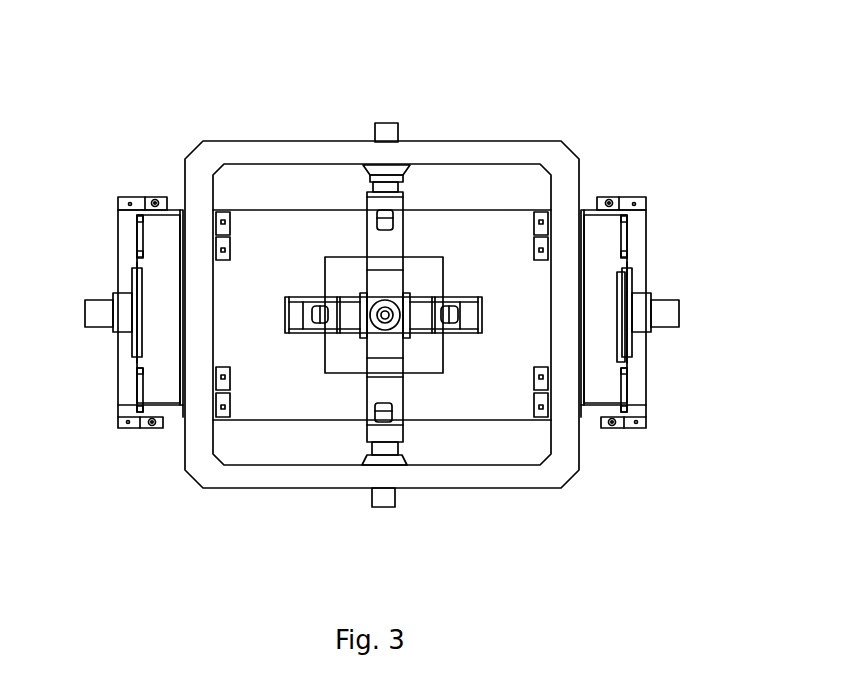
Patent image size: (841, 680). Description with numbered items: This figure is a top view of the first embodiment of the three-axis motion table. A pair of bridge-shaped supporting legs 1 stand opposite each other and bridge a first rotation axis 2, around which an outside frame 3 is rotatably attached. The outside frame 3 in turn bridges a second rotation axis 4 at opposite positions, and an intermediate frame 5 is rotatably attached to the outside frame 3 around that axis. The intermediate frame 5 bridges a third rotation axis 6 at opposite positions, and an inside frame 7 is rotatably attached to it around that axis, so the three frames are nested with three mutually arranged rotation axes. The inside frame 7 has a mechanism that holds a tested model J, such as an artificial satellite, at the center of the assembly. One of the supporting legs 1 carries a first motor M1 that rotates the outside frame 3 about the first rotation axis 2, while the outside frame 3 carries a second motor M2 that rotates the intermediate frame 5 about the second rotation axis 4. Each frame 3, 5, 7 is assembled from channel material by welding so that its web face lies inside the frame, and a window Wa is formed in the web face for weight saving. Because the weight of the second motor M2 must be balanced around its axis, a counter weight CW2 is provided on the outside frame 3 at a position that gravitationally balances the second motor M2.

The supporting leg 1 is at (137, 383).
The first rotation axis 2 is at (103, 305).
The outside frame 3 is at (523, 152).
The second rotation axis 4 is at (390, 123).
The intermediate frame 5 is at (367, 397).
The third rotation axis 6 is at (385, 311).
The inside frame 7 is at (473, 338).
The tested model J is at (427, 372).
The first motor M1 is at (623, 353).
The second motor M2 is at (416, 176).
The window Wa is at (316, 306).
The counter weight CW2 is at (404, 490).